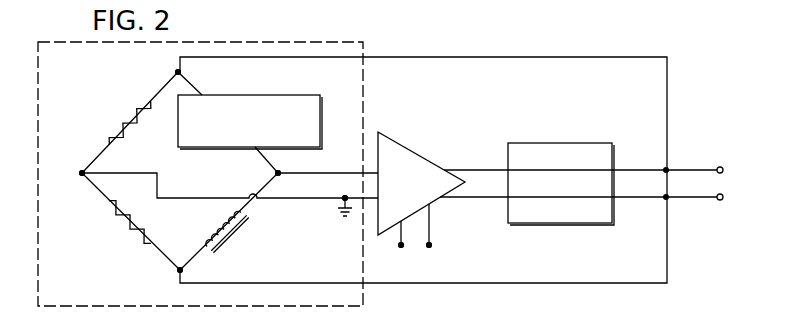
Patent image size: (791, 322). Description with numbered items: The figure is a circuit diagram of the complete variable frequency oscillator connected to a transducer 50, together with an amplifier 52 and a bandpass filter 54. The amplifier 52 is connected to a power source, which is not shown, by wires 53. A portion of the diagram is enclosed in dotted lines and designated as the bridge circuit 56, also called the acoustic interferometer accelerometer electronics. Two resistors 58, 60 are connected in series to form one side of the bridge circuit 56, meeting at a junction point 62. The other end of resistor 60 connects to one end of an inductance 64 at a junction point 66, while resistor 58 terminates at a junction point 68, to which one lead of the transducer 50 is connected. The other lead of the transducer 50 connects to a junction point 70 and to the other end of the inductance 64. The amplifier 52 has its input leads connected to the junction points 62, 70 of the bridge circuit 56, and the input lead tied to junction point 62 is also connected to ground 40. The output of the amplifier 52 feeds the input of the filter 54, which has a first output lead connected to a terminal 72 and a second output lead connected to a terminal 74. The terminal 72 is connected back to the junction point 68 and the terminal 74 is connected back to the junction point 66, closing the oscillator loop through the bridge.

The ground 40 is at (344, 201).
The transducer 50 is at (262, 95).
The amplifier 52 is at (420, 158).
The wires 53 is at (401, 246).
The bandpass filter 54 is at (545, 150).
The bridge circuit 56 is at (268, 43).
The resistor 58 is at (127, 117).
The resistor 60 is at (122, 220).
The junction point 62 is at (80, 173).
The inductance 64 is at (250, 212).
The junction point 66 is at (178, 271).
The junction point 68 is at (176, 71).
The junction point 70 is at (285, 169).
The terminal 72 is at (724, 168).
The terminal 74 is at (724, 196).